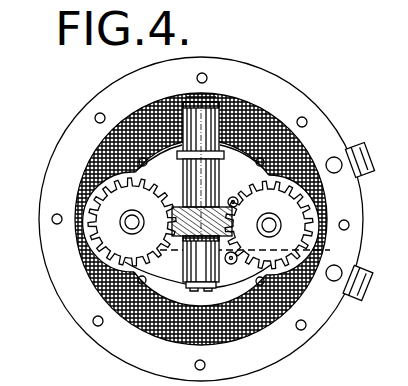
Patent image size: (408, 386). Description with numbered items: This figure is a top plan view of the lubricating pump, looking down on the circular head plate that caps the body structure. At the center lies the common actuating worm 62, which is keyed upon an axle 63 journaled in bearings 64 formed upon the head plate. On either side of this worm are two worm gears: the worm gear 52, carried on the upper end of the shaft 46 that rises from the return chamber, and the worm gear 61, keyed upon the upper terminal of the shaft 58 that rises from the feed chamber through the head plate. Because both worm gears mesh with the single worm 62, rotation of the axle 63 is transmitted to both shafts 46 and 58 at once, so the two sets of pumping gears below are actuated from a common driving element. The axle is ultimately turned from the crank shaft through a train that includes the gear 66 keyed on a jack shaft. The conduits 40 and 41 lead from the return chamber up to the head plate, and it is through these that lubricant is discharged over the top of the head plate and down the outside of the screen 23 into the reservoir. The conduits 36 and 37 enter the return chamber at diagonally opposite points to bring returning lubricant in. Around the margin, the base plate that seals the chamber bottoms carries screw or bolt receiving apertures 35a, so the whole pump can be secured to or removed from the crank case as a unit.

The screen 23 is at (277, 324).
The worm gear 52 is at (88, 275).
The actuating worm 62 is at (98, 289).
The bearings 64 is at (178, 296).
The bolt receiving apertures 35a is at (97, 326).
The shaft 46 is at (128, 224).
The worm gear 61 is at (303, 213).
The shaft 58 is at (330, 248).
The conduit 40 is at (230, 200).
The conduit 41 is at (216, 268).
The axle 63 is at (203, 301).
The gear 66 is at (219, 100).
The conduit 36 is at (350, 147).
The conduit 37 is at (350, 300).